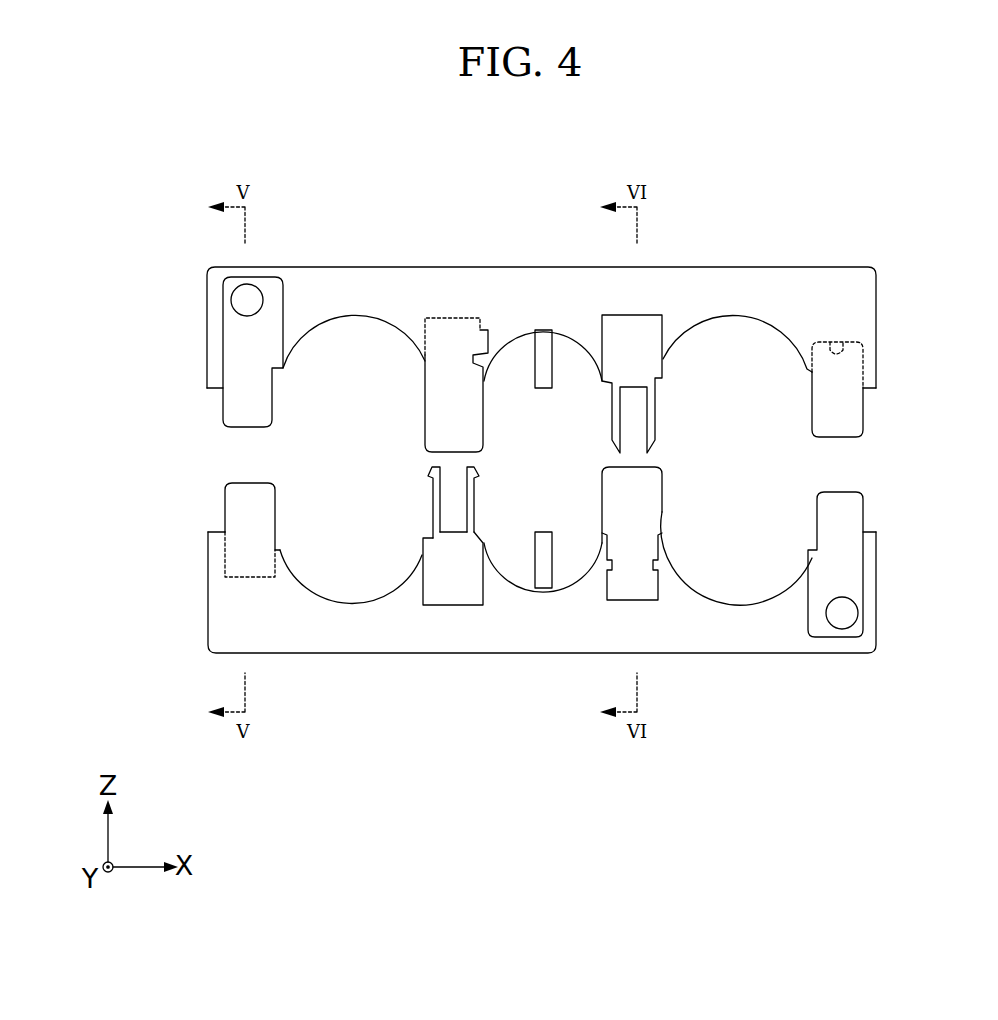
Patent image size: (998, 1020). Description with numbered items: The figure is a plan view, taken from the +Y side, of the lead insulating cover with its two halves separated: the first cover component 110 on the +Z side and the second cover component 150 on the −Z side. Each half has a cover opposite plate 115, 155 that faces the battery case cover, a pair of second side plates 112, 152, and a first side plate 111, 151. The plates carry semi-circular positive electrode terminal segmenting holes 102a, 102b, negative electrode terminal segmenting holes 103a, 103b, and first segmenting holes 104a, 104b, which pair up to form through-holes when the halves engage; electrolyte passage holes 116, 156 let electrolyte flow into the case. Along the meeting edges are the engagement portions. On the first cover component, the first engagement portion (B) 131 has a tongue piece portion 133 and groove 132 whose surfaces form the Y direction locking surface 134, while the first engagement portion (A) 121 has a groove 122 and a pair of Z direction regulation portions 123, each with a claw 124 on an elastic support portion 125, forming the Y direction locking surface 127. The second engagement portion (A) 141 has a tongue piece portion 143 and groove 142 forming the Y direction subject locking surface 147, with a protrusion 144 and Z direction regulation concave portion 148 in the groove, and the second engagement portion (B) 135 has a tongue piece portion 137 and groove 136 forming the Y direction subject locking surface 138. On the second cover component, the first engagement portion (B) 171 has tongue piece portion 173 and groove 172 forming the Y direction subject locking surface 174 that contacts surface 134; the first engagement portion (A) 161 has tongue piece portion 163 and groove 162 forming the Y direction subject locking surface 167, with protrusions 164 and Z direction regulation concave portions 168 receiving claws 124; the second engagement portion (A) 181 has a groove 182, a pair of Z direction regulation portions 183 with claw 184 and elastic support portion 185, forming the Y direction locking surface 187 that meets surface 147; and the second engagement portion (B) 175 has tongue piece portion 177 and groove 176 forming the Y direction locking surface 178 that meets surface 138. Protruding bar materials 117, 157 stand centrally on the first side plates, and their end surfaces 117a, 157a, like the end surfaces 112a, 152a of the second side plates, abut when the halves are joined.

The positive electrode terminal segmenting hole 102a is at (306, 330).
The positive electrode terminal segmenting hole 102b is at (318, 580).
The negative electrode terminal segmenting hole 103a is at (776, 330).
The negative electrode terminal segmenting hole 103b is at (752, 612).
The first segmenting hole 104a is at (576, 345).
The first segmenting hole 104b is at (512, 575).
The first cover component 110 is at (188, 323).
The first side plate 111 is at (487, 266).
The second side plate 112 is at (206, 345).
The −Z-side end surface 112a is at (216, 389).
The cover opposite plate 115 is at (660, 269).
The electrolyte passage hole 116 is at (249, 284).
The protruding bar material 117 is at (548, 329).
The −Z-side end surface 117a is at (538, 392).
The first engagement portion (A) 121 is at (663, 140).
The groove 122 is at (654, 340).
The Z direction regulation portion 123 is at (703, 182).
The claw 124 is at (660, 440).
The elastic support portion 125 is at (660, 413).
The Y direction locking surface 127 is at (613, 372).
The first engagement portion (B) 131 is at (107, 165).
The groove 132 is at (245, 408).
The tongue piece portion 133 is at (218, 303).
The Y direction locking surface 134 is at (238, 420).
The second engagement portion (B) 135 is at (845, 182).
The groove 136 is at (838, 345).
The tongue piece portion 137 is at (842, 400).
The Y direction subject locking surface 138 is at (817, 412).
The second engagement portion (A) 141 is at (405, 145).
The groove 142 is at (427, 405).
The tongue piece portion 143 is at (425, 340).
The protrusion 144 is at (432, 320).
The Y direction subject locking surface 147 is at (430, 425).
The Z direction regulation concave portion 148 is at (490, 338).
The second cover component 150 is at (192, 597).
The first side plate 151 is at (510, 655).
The second side plate 152 is at (207, 573).
The +Z-side end surface 152a is at (216, 532).
The cover opposite plate 155 is at (442, 634).
The electrolyte passage hole 156 is at (843, 622).
The protruding bar material 157 is at (548, 570).
The +Z-side end surface 157a is at (558, 593).
The first engagement portion (A) 161 is at (767, 758).
The groove 162 is at (652, 577).
The tongue piece portion 163 is at (665, 590).
The protrusion 164 is at (640, 590).
The Y direction subject locking surface 167 is at (653, 480).
The Z direction regulation concave portion 168 is at (607, 592).
The first engagement portion (B) 171 is at (205, 745).
The groove 172 is at (245, 590).
The tongue piece portion 173 is at (212, 635).
The Y direction subject locking surface 174 is at (238, 486).
The second engagement portion (B) 175 is at (882, 758).
The groove 176 is at (812, 622).
The tongue piece portion 177 is at (815, 515).
The Y direction locking surface 178 is at (862, 500).
The second engagement portion (A) 181 is at (420, 649).
The groove 182 is at (428, 597).
The Z direction regulation portion 183 is at (302, 747).
The claw 184 is at (432, 480).
The elastic support portion 185 is at (468, 503).
The Y direction locking surface 187 is at (477, 540).